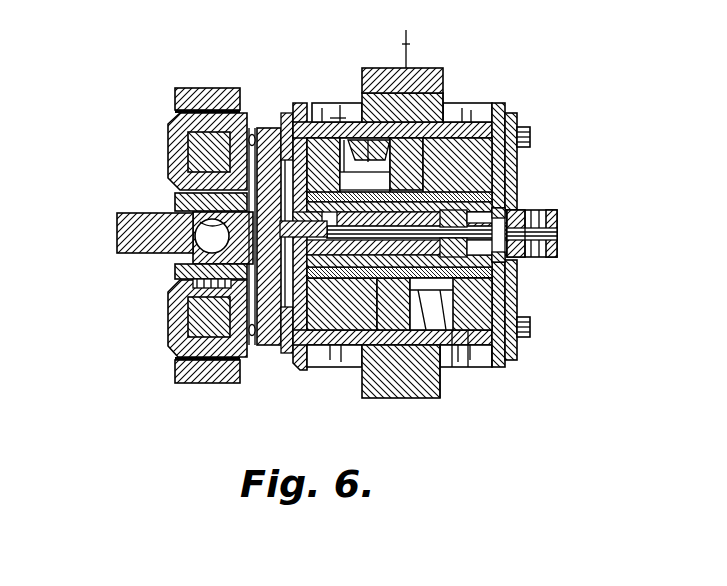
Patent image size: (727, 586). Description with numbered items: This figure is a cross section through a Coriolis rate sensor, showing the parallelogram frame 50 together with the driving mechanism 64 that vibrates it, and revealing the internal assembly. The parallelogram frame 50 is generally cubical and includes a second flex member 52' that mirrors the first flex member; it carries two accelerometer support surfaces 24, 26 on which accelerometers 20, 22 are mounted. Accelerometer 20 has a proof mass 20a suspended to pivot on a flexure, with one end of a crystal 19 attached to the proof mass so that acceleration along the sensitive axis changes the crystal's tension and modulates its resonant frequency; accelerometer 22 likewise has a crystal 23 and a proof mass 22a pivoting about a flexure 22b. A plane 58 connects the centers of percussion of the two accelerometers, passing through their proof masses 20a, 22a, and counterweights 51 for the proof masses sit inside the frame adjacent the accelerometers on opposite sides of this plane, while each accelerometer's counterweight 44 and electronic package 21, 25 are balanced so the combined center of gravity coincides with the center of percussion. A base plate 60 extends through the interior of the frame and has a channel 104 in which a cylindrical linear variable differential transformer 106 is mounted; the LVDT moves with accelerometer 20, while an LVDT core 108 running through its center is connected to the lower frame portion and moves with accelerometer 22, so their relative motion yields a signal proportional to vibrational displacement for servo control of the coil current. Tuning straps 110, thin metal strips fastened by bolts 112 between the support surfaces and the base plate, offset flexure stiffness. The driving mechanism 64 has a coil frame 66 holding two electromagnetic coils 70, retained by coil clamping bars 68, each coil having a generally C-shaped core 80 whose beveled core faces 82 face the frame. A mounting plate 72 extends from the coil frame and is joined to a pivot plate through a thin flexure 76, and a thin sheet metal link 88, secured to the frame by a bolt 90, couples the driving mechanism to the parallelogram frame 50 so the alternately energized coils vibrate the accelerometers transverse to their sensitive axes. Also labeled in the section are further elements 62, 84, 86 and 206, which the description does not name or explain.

The crystal 19 is at (442, 72).
The accelerometer 20 is at (460, 103).
The proof mass 20a is at (505, 115).
The electronic package 21 is at (462, 100).
The accelerometer 22 is at (360, 372).
The proof mass 22a is at (437, 367).
The flexure 22b is at (486, 367).
The crystal 23 is at (451, 368).
The accelerometer support surface 24 is at (348, 140).
The electronic package 25 is at (352, 372).
The accelerometer support surface 26 is at (480, 367).
The counterweight 44 is at (386, 64).
The parallelogram frame 50 is at (588, 125).
The counterweight 51 is at (470, 175).
The second flex member 52' is at (509, 86).
The plane 58 is at (410, 45).
The base plate 60 is at (550, 212).
The lock nut 62 is at (535, 258).
The driving mechanism 64 is at (128, 318).
The coil frame 66 is at (180, 270).
The coil clamping bar 68 is at (208, 86).
The electromagnetic coil 70 is at (170, 142).
The mounting plate 72 is at (115, 240).
The flexure 76 is at (210, 236).
The core 80 is at (188, 160).
The core face 82 is at (252, 134).
The mounting plate 84 is at (315, 104).
The spacer plate 86 is at (272, 127).
The link 88 is at (212, 253).
The bolt 90 is at (233, 286).
The channel 104 is at (495, 258).
The linear variable differential transformer 106 is at (492, 262).
The LVDT core 108 is at (505, 212).
The tuning strap 110 is at (520, 167).
The bolt 112 is at (530, 133).
The terminal pin 206 is at (348, 68).